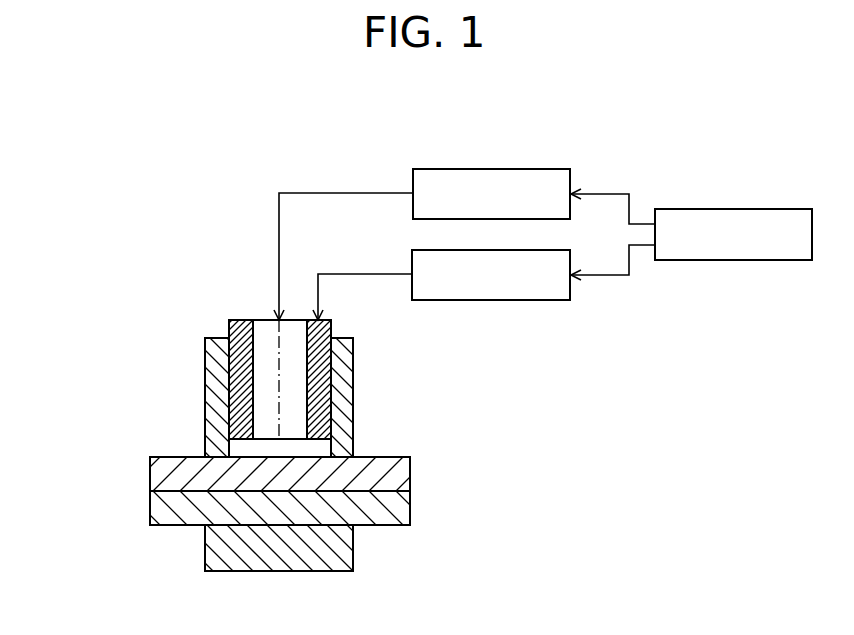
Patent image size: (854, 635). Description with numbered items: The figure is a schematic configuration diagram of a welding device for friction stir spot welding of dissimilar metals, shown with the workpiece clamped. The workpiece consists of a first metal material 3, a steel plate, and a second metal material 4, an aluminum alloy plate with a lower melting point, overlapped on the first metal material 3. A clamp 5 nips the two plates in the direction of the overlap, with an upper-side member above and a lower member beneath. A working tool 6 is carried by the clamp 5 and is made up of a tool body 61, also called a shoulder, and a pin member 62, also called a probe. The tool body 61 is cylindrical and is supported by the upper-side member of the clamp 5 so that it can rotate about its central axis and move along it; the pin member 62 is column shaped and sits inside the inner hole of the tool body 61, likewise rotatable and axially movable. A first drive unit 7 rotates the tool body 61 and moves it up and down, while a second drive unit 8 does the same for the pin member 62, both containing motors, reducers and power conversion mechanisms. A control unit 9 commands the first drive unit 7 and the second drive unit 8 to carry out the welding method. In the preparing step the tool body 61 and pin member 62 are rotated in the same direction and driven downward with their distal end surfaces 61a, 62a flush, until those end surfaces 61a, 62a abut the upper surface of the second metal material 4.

The first metal material 3 is at (410, 503).
The second metal material 4 is at (410, 473).
The clamp 5 is at (207, 425).
The working tool 6 is at (276, 393).
The first drive unit 7 is at (507, 301).
The second drive unit 8 is at (507, 169).
The control unit 9 is at (760, 209).
The tool body 61 is at (225, 322).
The distal end surface of the tool body 61a is at (330, 446).
The pin member 62 is at (265, 330).
The distal end surface of the pin member 62a is at (268, 440).